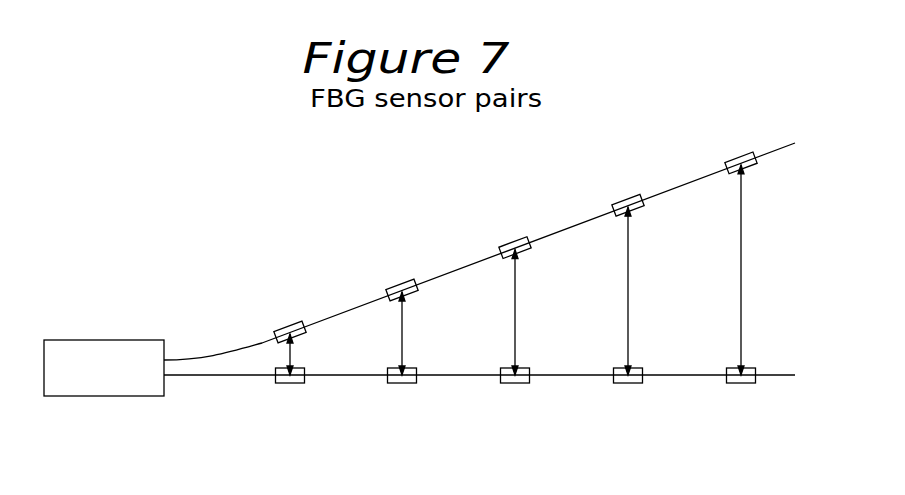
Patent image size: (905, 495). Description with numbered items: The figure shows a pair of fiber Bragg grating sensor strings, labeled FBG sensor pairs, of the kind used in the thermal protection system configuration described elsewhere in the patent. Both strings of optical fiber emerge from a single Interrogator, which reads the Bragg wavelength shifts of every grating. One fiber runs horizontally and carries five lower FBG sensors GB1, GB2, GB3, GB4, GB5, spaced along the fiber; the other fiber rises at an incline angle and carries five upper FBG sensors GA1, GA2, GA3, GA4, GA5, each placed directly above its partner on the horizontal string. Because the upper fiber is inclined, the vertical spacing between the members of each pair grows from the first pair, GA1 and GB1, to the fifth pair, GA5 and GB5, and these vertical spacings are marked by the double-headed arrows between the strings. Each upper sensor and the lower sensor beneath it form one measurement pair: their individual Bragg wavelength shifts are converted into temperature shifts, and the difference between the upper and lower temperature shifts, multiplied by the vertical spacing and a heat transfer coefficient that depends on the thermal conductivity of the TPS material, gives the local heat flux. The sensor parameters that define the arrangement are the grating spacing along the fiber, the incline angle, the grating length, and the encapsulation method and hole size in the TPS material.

The interrogator Interrogator is at (118, 349).
The upper FBG sensor GA1 is at (286, 305).
The upper FBG sensor GA2 is at (398, 263).
The upper FBG sensor GA3 is at (511, 221).
The upper FBG sensor GA4 is at (624, 179).
The upper FBG sensor GA5 is at (737, 136).
The lower FBG sensor GB1 is at (296, 412).
The lower FBG sensor GB2 is at (408, 412).
The lower FBG sensor GB3 is at (521, 412).
The lower FBG sensor GB4 is at (634, 412).
The lower FBG sensor GB5 is at (747, 412).